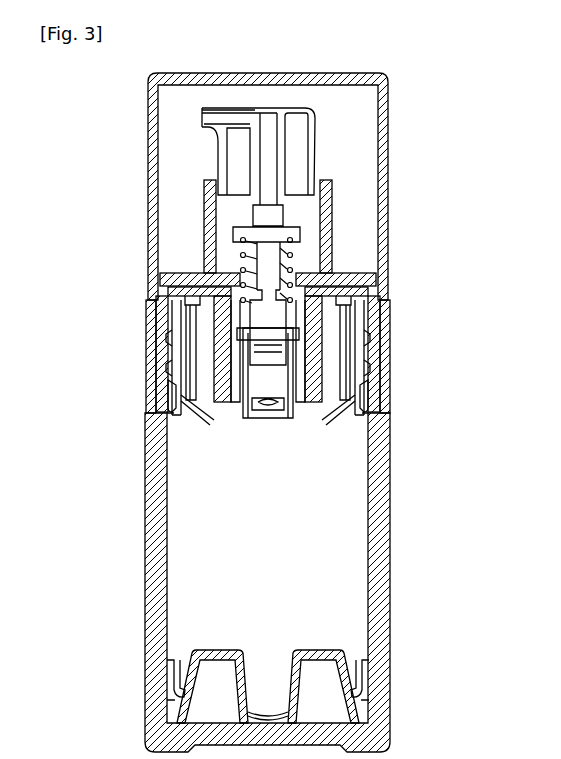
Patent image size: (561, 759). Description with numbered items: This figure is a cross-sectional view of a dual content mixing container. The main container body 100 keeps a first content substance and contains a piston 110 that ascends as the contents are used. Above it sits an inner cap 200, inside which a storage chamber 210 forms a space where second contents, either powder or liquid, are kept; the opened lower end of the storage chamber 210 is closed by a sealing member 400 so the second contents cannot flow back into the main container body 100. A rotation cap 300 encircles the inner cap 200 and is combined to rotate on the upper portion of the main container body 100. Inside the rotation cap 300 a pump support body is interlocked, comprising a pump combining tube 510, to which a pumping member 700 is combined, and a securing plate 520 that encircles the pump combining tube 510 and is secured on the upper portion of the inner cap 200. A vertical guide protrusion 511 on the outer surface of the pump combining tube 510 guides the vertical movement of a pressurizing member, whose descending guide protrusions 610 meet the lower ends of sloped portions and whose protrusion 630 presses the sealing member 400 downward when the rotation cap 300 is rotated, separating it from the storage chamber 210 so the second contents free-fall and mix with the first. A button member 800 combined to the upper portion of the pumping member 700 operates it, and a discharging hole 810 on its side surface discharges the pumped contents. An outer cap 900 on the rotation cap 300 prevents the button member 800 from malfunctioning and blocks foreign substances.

The main container body 100 is at (390, 556).
The piston 110 is at (356, 681).
The inner cap 200 is at (166, 356).
The storage chamber 210 is at (190, 362).
The rotation cap 300 is at (389, 374).
The sealing member 400 is at (210, 400).
The pump combining tube 510 is at (200, 335).
The vertical guide protrusion 511 is at (185, 307).
The securing plate 520 is at (158, 286).
The descending guide protrusion 610 is at (370, 303).
The protrusion 630 is at (377, 362).
The pumping member 700 is at (297, 241).
The button member 800 is at (313, 142).
The discharging hole 810 is at (207, 119).
The outer cap 900 is at (154, 116).